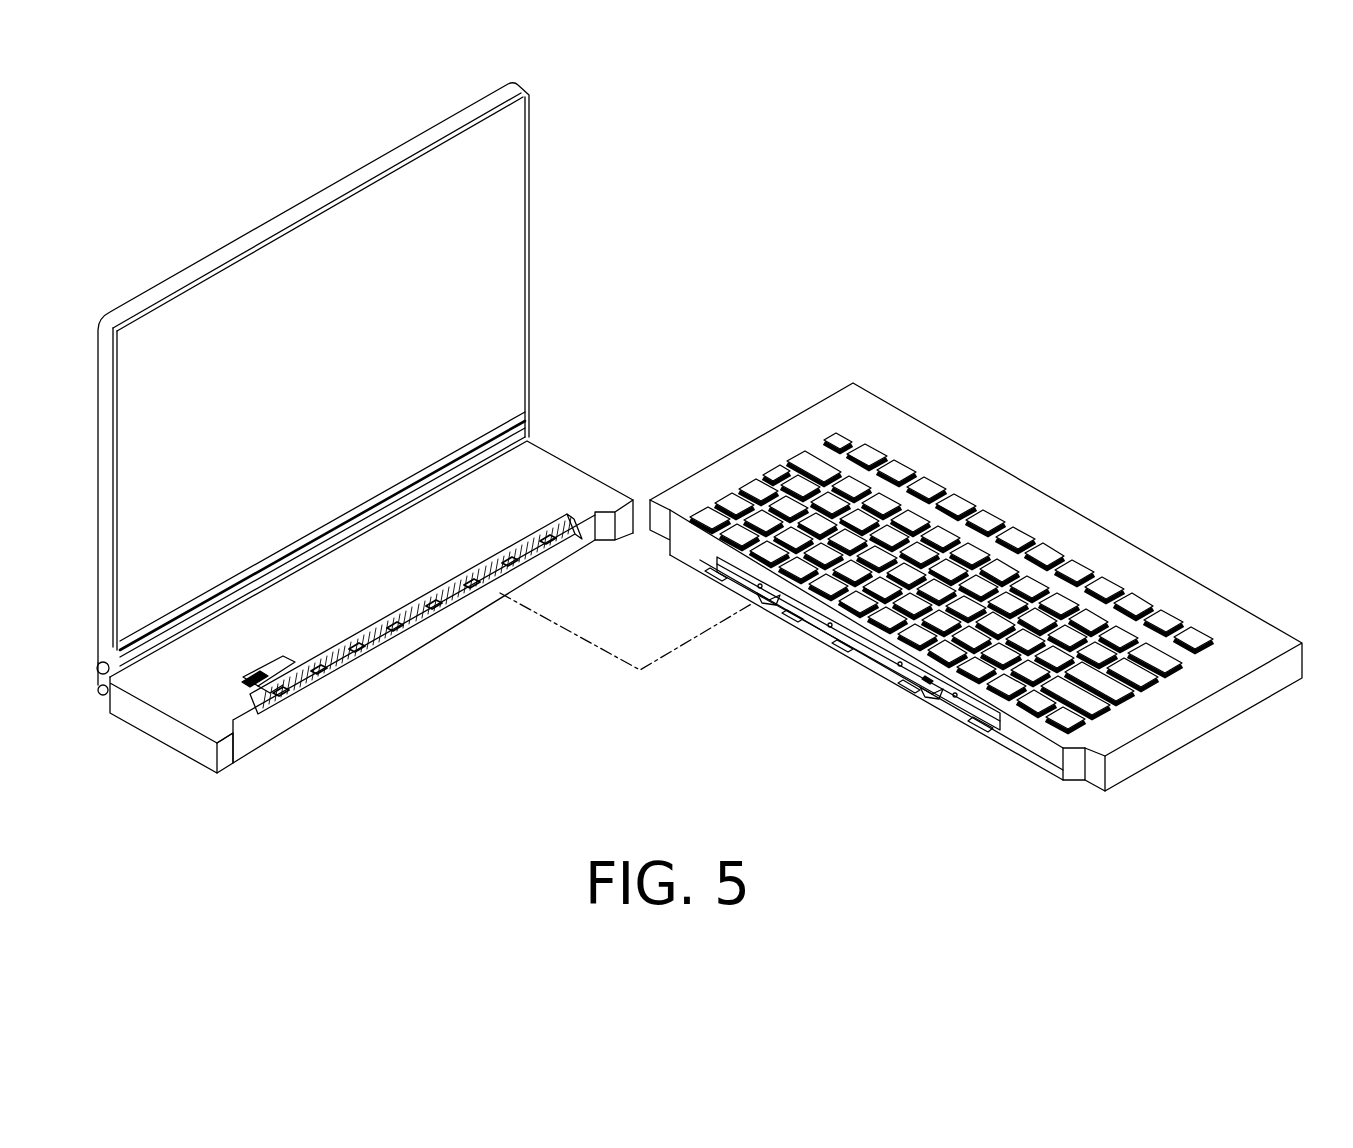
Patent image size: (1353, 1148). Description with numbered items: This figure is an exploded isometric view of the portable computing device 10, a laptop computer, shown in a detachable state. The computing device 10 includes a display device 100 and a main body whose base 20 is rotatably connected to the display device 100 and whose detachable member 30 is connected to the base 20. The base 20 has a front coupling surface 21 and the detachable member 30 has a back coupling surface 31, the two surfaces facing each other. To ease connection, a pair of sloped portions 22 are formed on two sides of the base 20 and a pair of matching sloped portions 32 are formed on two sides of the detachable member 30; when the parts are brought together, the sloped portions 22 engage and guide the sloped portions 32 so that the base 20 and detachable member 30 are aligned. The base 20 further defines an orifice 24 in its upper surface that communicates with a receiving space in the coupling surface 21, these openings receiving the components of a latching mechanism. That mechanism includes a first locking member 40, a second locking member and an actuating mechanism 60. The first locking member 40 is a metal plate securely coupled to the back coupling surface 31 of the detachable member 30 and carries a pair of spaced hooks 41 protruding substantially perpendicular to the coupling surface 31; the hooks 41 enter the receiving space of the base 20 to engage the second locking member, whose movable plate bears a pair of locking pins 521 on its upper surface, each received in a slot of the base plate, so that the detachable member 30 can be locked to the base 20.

The portable computing device 10 is at (826, 279).
The display device 100 is at (503, 270).
The base 20 is at (533, 463).
The front coupling surface 21 is at (245, 732).
The sloped portions 22 is at (603, 530).
The orifice 24 is at (267, 679).
The locking pins 521 is at (327, 678).
The actuating mechanism 60 is at (250, 673).
The detachable member 30 is at (1157, 712).
The back coupling surface 31 is at (1032, 750).
The sloped portions 32 is at (1072, 768).
The first locking member 40 is at (833, 625).
The hooks 41 is at (939, 707).